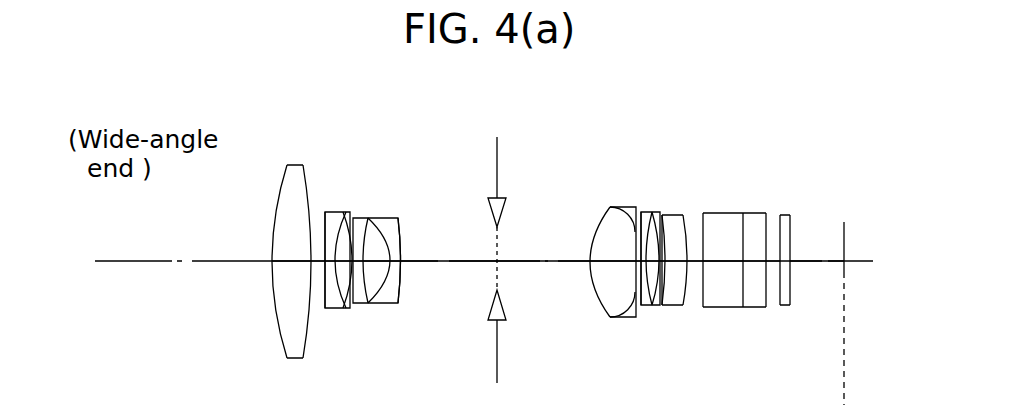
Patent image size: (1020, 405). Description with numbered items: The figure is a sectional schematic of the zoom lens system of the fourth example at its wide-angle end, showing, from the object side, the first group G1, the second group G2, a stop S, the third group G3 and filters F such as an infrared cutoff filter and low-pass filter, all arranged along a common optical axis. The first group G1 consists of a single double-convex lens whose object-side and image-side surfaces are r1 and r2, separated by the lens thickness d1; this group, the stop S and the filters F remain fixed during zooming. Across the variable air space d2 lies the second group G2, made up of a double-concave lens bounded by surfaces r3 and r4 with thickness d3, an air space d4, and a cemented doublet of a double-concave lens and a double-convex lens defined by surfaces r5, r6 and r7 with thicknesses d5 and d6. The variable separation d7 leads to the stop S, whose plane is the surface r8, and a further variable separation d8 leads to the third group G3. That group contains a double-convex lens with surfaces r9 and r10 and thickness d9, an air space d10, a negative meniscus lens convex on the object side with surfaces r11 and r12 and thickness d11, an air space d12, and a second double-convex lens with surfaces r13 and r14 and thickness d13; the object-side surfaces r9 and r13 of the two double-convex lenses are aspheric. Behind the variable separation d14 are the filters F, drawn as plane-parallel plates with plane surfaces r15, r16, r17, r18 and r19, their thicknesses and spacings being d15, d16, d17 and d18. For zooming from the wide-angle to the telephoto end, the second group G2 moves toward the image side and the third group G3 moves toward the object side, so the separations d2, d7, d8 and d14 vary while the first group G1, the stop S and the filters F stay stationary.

The first group G1 is at (310, 122).
The second group G2 is at (403, 122).
The third group G3 is at (690, 122).
The stop S is at (512, 122).
The filters F is at (797, 122).
The radius of curvature of first lens surface r1 is at (282, 183).
The radius of curvature of second lens surface r2 is at (304, 183).
The radius of curvature of third lens surface r3 is at (326, 232).
The radius of curvature of fourth lens surface r4 is at (337, 228).
The radius of curvature of fifth lens surface r5 is at (356, 233).
The radius of curvature of sixth lens surface r6 is at (372, 227).
The radius of curvature of seventh lens surface r7 is at (399, 236).
The stop surface r8 is at (497, 247).
The radius of curvature of ninth lens surface r9 is at (594, 225).
The radius of curvature of tenth lens surface r10 is at (627, 223).
The radius of curvature of eleventh lens surface r11 is at (640, 228).
The radius of curvature of twelfth lens surface r12 is at (653, 226).
The radius of curvature of thirteenth lens surface r13 is at (666, 216).
The radius of curvature of fourteenth lens surface r14 is at (688, 225).
The radius of curvature of fifteenth surface r15 is at (704, 226).
The radius of curvature of sixteenth surface r16 is at (744, 232).
The radius of curvature of seventeenth surface r17 is at (766, 228).
The radius of curvature of eighteenth surface r18 is at (783, 228).
The radius of curvature of nineteenth surface r19 is at (792, 228).
The separation between first and second lens surfaces d1 is at (299, 265).
The separation between second and third lens surfaces d2 is at (318, 264).
The separation between third and fourth lens surfaces d3 is at (330, 300).
The separation between fourth and fifth lens surfaces d4 is at (346, 298).
The separation between fifth and sixth lens surfaces d5 is at (357, 285).
The separation between sixth and seventh lens surfaces d6 is at (383, 285).
The separation between seventh and eighth surfaces d7 is at (438, 263).
The separation between eighth and ninth surfaces d8 is at (548, 263).
The separation between ninth and tenth lens surfaces d9 is at (613, 266).
The separation between tenth and eleventh lens surfaces d10 is at (626, 270).
The separation between eleventh and twelfth lens surfaces d11 is at (642, 272).
The separation between twelfth and thirteenth lens surfaces d12 is at (668, 275).
The separation between thirteenth and fourteenth lens surfaces d13 is at (677, 272).
The separation between fourteenth and fifteenth surfaces d14 is at (696, 268).
The separation between fifteenth and sixteenth surfaces d15 is at (722, 264).
The separation between sixteenth and seventeenth surfaces d16 is at (754, 264).
The separation between seventeenth and eighteenth surfaces d17 is at (771, 264).
The separation between eighteenth and nineteenth surfaces d18 is at (787, 266).